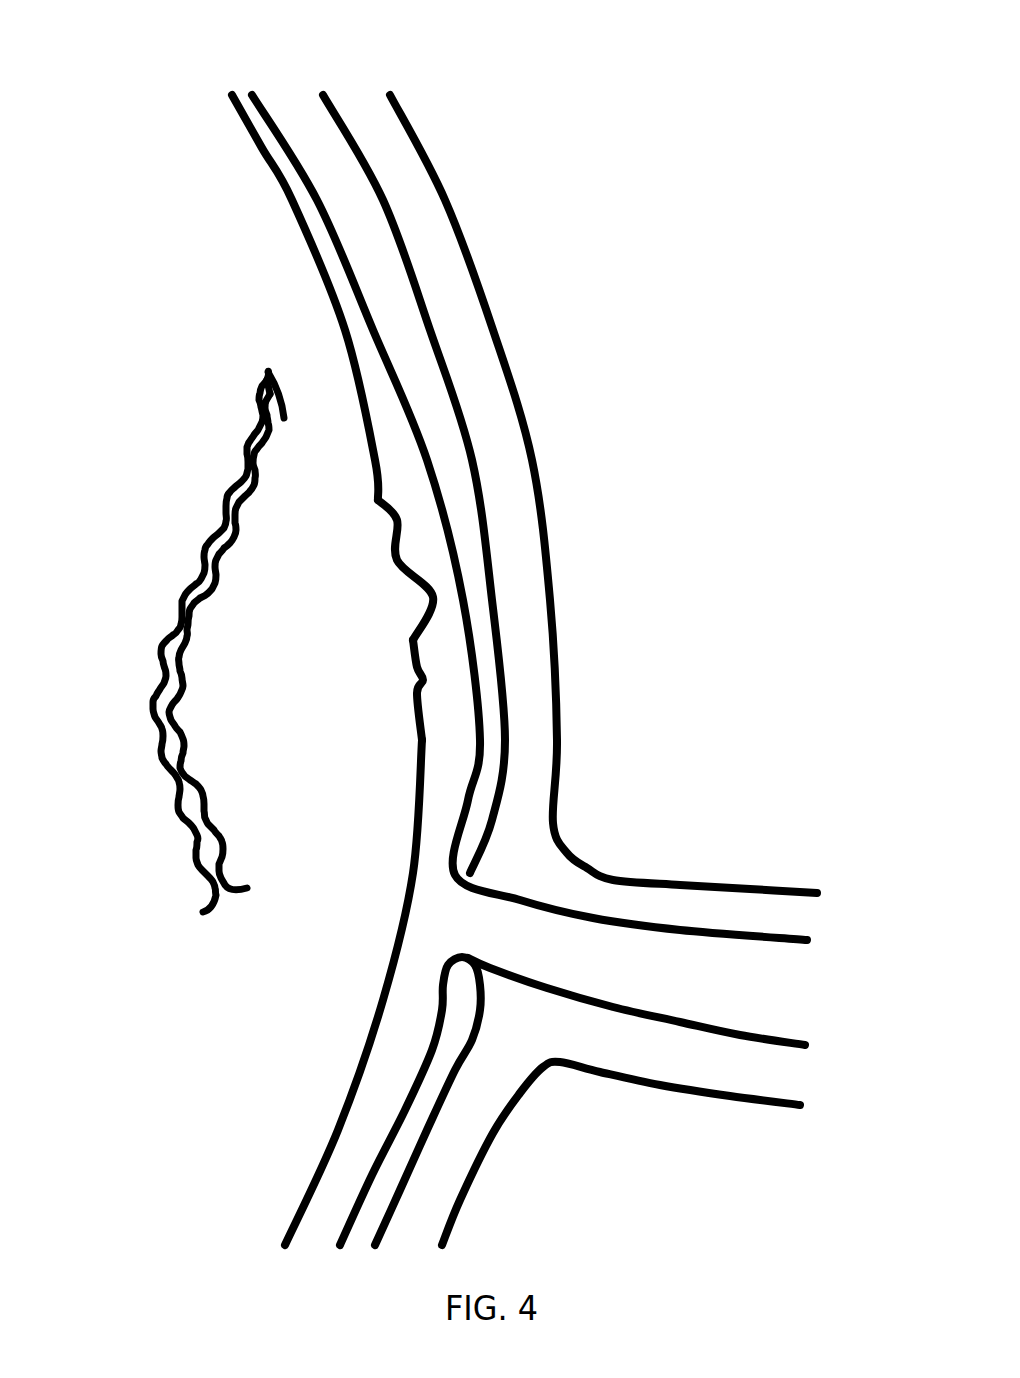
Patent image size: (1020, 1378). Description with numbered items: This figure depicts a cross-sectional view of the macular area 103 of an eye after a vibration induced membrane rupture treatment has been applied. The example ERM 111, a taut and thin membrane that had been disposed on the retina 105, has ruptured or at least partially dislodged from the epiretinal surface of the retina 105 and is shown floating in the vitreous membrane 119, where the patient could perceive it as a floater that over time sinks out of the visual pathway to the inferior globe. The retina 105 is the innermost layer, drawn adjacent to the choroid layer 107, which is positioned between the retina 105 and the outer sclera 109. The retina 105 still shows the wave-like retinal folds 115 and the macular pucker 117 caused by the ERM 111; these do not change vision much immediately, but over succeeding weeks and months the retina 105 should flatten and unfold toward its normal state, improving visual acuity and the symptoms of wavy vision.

The macular area 103 is at (176, 138).
The retina 105 is at (241, 97).
The choroid 107 is at (302, 105).
The sclera 109 is at (392, 135).
The ERM 111 is at (220, 505).
The retinal folds 115 is at (412, 650).
The macular pucker 117 is at (415, 602).
The vitreous membrane 119 is at (195, 282).